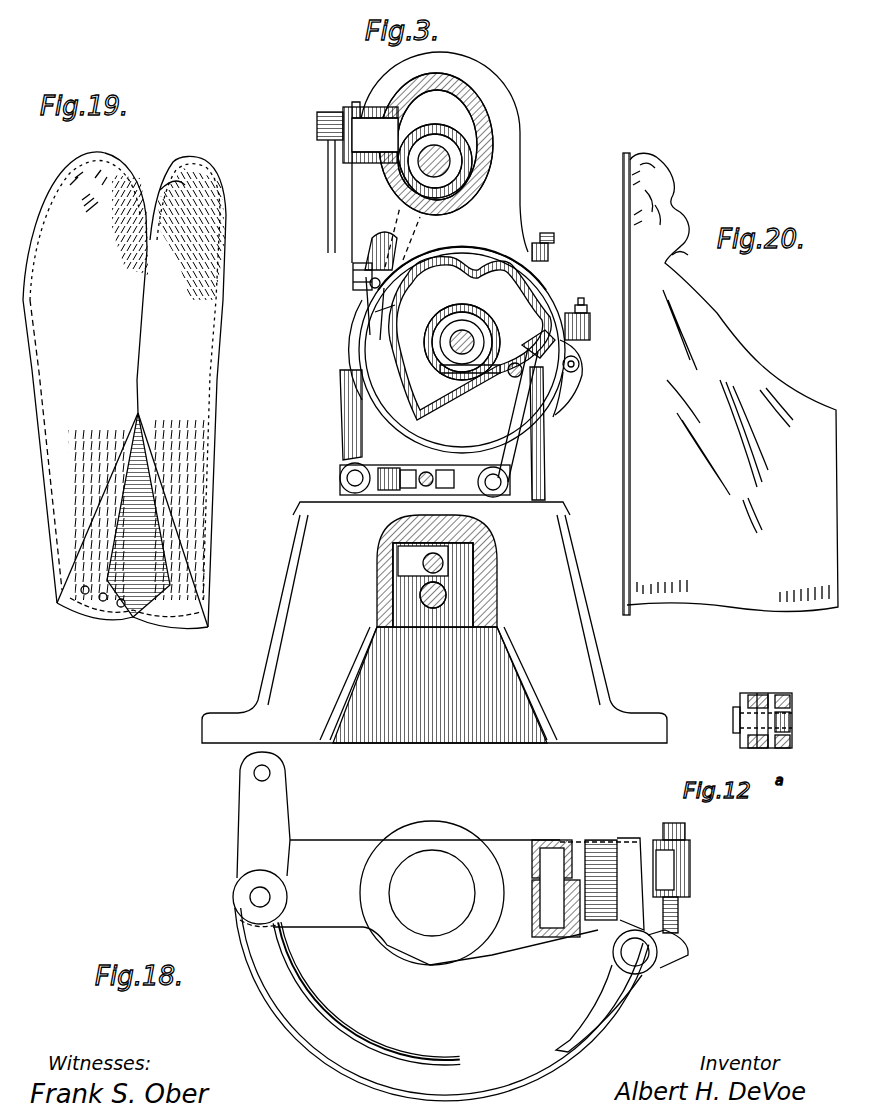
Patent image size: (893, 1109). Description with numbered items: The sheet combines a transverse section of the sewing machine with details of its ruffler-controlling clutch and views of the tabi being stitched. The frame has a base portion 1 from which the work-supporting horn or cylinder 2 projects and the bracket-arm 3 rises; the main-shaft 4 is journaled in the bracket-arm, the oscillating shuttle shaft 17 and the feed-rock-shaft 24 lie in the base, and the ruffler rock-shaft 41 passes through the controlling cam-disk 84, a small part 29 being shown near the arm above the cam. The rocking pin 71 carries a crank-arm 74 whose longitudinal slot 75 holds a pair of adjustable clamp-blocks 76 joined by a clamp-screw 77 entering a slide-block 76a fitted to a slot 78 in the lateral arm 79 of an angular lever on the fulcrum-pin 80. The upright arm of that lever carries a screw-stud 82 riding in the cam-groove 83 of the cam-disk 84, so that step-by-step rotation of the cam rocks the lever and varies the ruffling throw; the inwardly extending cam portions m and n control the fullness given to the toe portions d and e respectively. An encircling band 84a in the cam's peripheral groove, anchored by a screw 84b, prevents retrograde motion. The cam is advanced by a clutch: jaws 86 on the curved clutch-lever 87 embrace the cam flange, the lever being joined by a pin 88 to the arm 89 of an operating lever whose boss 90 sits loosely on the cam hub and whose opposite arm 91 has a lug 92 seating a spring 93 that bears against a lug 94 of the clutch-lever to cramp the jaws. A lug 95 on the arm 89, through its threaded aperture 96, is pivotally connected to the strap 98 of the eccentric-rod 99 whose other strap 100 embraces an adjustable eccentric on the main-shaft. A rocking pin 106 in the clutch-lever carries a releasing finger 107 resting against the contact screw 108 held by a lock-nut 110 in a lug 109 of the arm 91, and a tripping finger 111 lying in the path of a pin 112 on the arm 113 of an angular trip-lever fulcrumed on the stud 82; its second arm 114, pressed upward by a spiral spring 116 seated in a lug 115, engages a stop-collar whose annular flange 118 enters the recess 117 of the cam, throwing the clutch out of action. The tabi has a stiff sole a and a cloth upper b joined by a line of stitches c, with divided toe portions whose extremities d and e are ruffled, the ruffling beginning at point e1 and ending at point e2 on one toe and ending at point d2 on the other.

In FIG. 3, the base portion 1 is at (434, 622).
In FIG. 3, the work-supporting horn or cylinder 2 is at (372, 562).
In FIG. 3, the bracket-arm 3 is at (516, 95).
In FIG. 3, the main-shaft 4 is at (433, 150).
In FIG. 3, the oscillating shaft 17 is at (485, 575).
In FIG. 3, the feed-rock-shaft 24 is at (470, 598).
In FIG. 3, the screw 29 is at (546, 243).
In FIG. 3, the ruffler rock-shaft 41 is at (450, 342).
In FIG. 3, the rocking pin 71 is at (425, 479).
In FIG. 3, the crank-arm 74 is at (386, 468).
In FIG. 12A, the crank-arm 74 is at (755, 695).
In FIG. 3, the longitudinal slot 75 is at (445, 495).
In FIG. 3, the adjustable clamp-blocks 76 is at (407, 470).
In FIG. 12A, the adjustable clamp-blocks 76 is at (748, 697).
In FIG. 12A, the slide-block 76a is at (791, 723).
In FIG. 3, the clamp-screw 77 is at (426, 472).
In FIG. 12A, the clamp-screw 77 is at (733, 722).
In FIG. 3, the slot 78 is at (400, 495).
In FIG. 3, the lateral arm 79 is at (385, 492).
In FIG. 12A, the lateral arm 79 is at (785, 700).
In FIG. 3, the fulcrum-pin 80 is at (493, 482).
In FIG. 3, the screw-stud 82 is at (549, 315).
In FIG. 3, the cam-groove 83 is at (455, 275).
In FIG. 3, the controlling cam-disk 84 is at (408, 345).
In FIG. 3, the encircling band 84a is at (475, 250).
In FIG. 3, the screw 84b is at (537, 455).
In FIG. 18, the jaws 86 is at (605, 860).
In FIG. 3, the clutch-lever 87 is at (362, 350).
In FIG. 18, the clutch-lever 87 is at (442, 1004).
In FIG. 18, the pin 88 is at (252, 900).
In FIG. 18, the lever-arm 89 is at (435, 902).
In FIG. 18, the boss 90 is at (432, 893).
In FIG. 18, the lever-arm 91 is at (513, 927).
In FIG. 18, the lateral lug 92 is at (553, 919).
In FIG. 18, the spring 93 is at (548, 850).
In FIG. 18, the lateral lug 94 is at (535, 852).
In FIG. 3, the lug 95 is at (368, 302).
In FIG. 18, the lug 95 is at (261, 838).
In FIG. 18, the threaded aperture 96 is at (272, 773).
In FIG. 3, the strap 98 is at (356, 290).
In FIG. 3, the eccentric-rod 99 is at (398, 250).
In FIG. 3, the strap 100 is at (470, 172).
In FIG. 3, the rocking pin 106 is at (580, 366).
In FIG. 18, the rocking pin 106 is at (635, 952).
In FIG. 18, the clutch releasing finger 107 is at (690, 950).
In FIG. 3, the contact screw 108 is at (592, 295).
In FIG. 18, the contact screw 108 is at (679, 912).
In FIG. 3, the lug 109 is at (590, 322).
In FIG. 18, the lug 109 is at (687, 868).
In FIG. 3, the lock-nut 110 is at (594, 305).
In FIG. 18, the lock-nut 110 is at (686, 830).
In FIG. 3, the tripping finger 111 is at (556, 418).
In FIG. 18, the tripping finger 111 is at (599, 1008).
In FIG. 3, the lateral pin 112 is at (586, 408).
In FIG. 3, the arm 113 is at (578, 380).
In FIG. 3, the arm 114 is at (470, 370).
In FIG. 3, the lug 115 is at (520, 385).
In FIG. 3, the spiral spring 116 is at (523, 377).
In FIG. 3, the recess 117 is at (392, 310).
In FIG. 3, the annular flange 118 is at (462, 342).
In FIG. 3, the sole a is at (621, 463).
In FIG. 19, the sole a is at (137, 550).
In FIG. 20, the sole a is at (622, 463).
In FIG. 19, the upper b is at (124, 389).
In FIG. 20, the upper b is at (732, 382).
In FIG. 19, the line of stitches c is at (213, 365).
In FIG. 19, the toe portion d is at (178, 195).
In FIG. 19, the point d2 is at (222, 205).
In FIG. 19, the toe portion e is at (88, 191).
In FIG. 20, the toe portion e is at (673, 185).
In FIG. 19, the point e1 is at (52, 212).
In FIG. 20, the point e1 is at (628, 212).
In FIG. 19, the throw-out point e2 is at (147, 200).
In FIG. 3, the cam portion m is at (482, 293).
In FIG. 3, the cam portion n is at (431, 408).